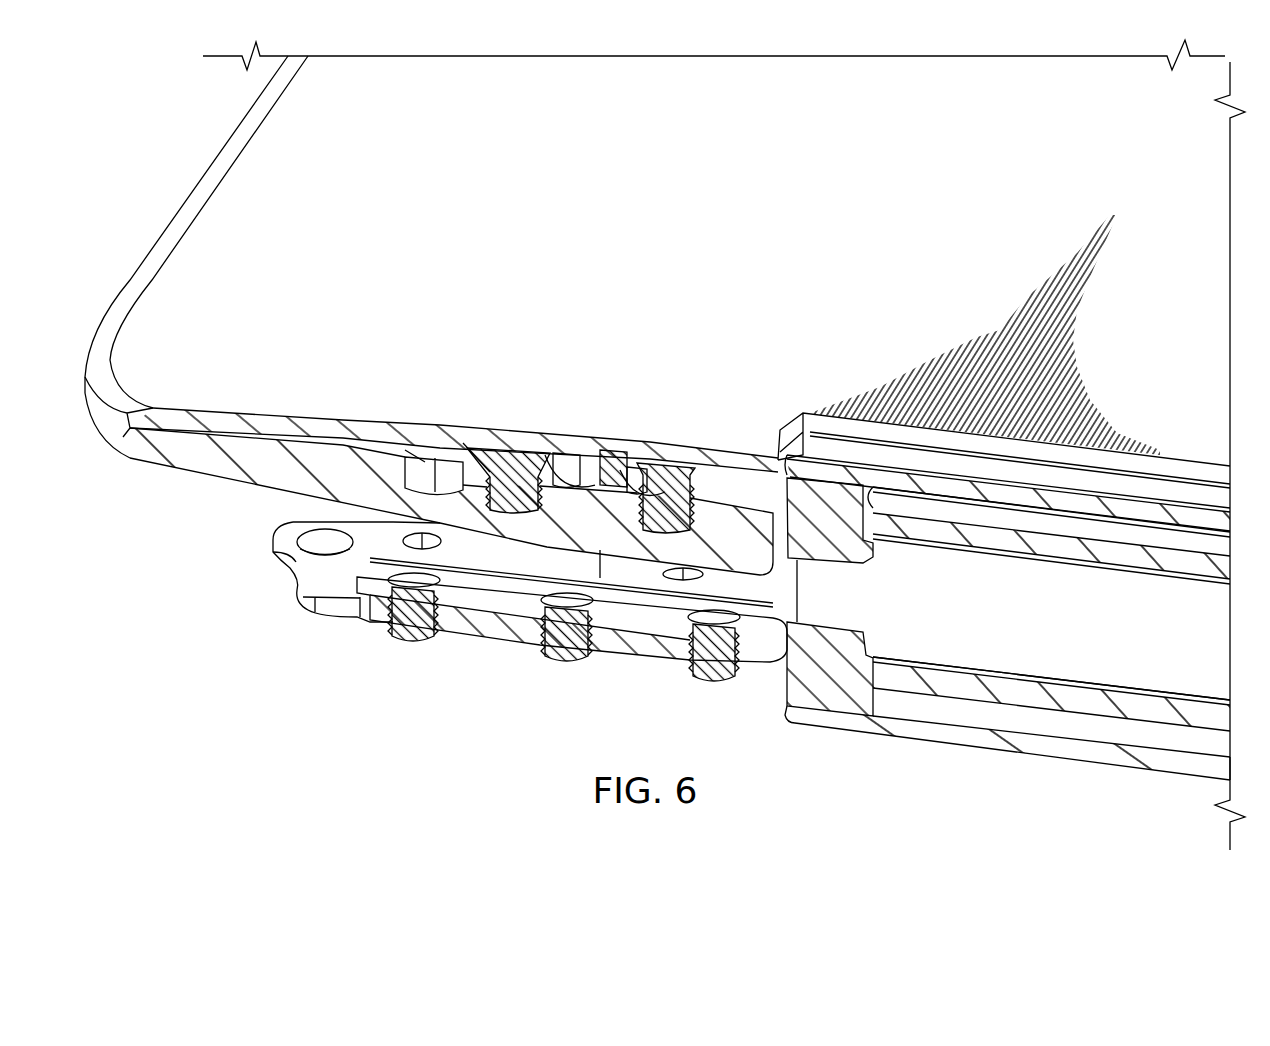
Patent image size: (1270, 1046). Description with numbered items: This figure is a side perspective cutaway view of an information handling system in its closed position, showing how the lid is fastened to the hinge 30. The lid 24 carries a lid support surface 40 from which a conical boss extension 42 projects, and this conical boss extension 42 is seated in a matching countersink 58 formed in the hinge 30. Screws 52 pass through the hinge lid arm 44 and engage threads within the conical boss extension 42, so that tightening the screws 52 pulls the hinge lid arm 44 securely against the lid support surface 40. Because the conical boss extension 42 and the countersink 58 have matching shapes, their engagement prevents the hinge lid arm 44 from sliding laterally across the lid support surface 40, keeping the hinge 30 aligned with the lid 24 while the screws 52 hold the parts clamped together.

The lid 24 is at (233, 145).
The lid support surface 40 is at (237, 477).
The countersink 58 is at (470, 450).
The screw 52 is at (805, 388).
The conical boss extension 42 is at (708, 465).
The hinge lid arm 44 is at (853, 552).
The hinge 30 is at (1037, 655).